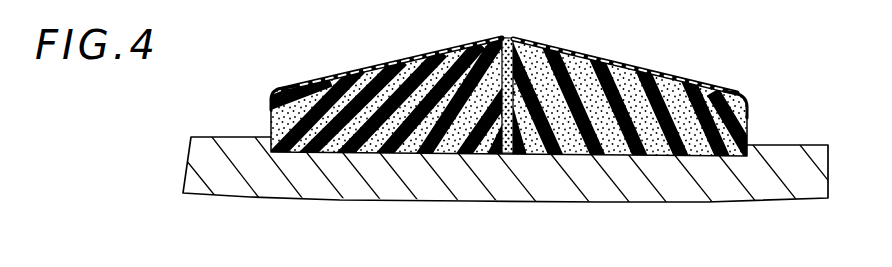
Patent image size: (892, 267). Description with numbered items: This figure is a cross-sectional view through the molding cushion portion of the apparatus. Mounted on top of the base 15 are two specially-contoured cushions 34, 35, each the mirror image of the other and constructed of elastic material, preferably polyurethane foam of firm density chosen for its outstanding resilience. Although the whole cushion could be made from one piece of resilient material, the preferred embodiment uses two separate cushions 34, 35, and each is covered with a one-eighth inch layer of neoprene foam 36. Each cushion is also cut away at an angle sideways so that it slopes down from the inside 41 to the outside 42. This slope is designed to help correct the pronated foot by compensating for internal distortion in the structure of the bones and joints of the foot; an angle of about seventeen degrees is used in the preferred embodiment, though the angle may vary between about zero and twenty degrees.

The base 15 is at (828, 192).
The cushion 34 is at (357, 153).
The cushion 35 is at (618, 157).
The layer of neoprene foam 36 is at (344, 76).
The inside 41 is at (507, 38).
The outside 42 is at (271, 98).